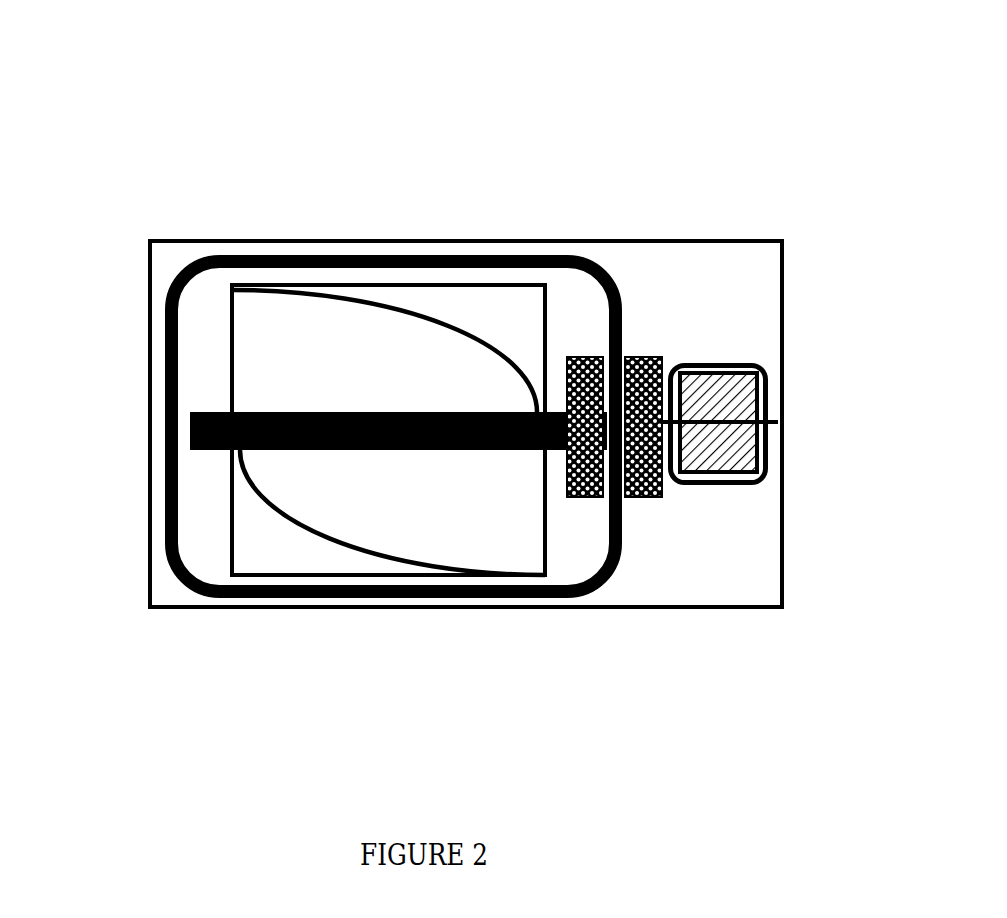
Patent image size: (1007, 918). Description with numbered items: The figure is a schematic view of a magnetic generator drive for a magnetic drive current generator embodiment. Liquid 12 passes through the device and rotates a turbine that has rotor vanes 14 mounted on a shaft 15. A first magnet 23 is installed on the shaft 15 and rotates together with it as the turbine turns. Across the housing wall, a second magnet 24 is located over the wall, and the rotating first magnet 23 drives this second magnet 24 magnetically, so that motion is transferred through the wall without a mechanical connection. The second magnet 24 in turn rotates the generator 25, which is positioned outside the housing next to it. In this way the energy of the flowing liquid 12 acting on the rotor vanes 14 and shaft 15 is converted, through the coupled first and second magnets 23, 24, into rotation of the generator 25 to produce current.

The liquid 12 is at (573, 312).
The rotor vanes 14 is at (335, 352).
The shaft 15 is at (370, 455).
The first magnet 23 is at (582, 500).
The second magnet 24 is at (650, 500).
The generator 25 is at (742, 370).